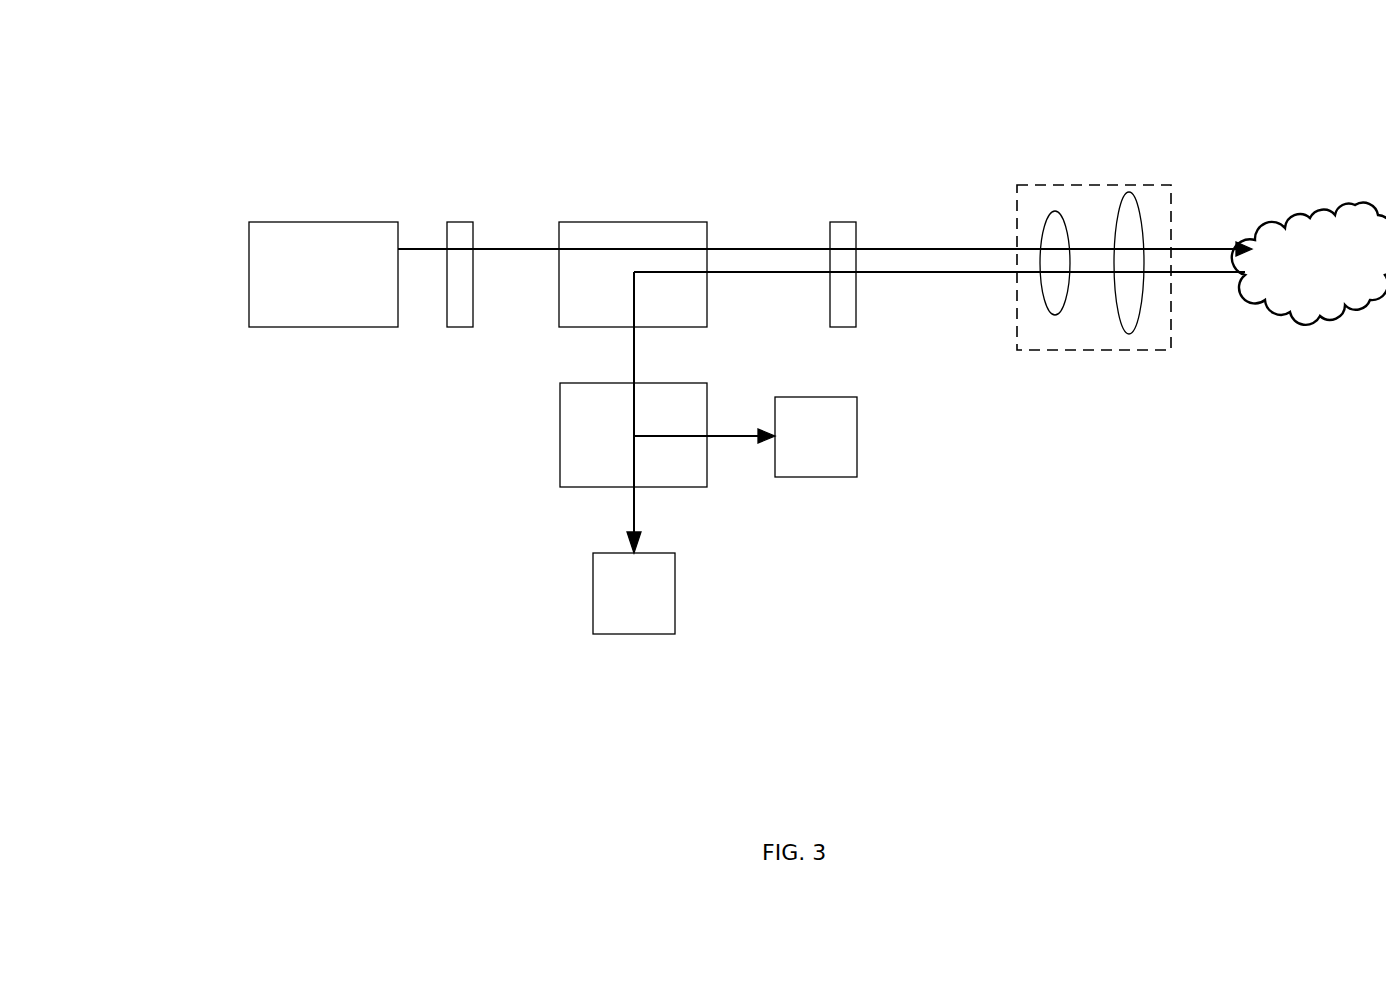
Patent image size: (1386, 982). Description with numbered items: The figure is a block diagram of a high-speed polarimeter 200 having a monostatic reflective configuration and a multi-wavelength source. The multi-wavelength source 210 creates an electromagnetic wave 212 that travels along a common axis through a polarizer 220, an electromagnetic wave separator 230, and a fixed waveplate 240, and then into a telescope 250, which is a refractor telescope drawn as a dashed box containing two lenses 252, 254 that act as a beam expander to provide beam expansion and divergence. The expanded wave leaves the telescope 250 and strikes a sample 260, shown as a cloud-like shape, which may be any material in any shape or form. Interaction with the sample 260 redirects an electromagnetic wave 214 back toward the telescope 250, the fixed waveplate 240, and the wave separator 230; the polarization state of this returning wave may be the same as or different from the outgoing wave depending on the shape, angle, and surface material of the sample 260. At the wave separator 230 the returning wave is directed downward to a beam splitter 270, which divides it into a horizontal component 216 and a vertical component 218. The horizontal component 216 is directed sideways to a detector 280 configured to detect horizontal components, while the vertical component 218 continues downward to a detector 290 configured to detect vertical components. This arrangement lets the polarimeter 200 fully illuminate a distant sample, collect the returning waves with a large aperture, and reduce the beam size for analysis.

The high-speed polarimeter 200 is at (1055, 127).
The multi-wavelength source 210 is at (249, 280).
The electromagnetic wave 212 is at (506, 251).
The electromagnetic wave 214 is at (892, 274).
The horizontal component 216 is at (728, 438).
The vertical component 218 is at (631, 518).
The polarizer 220 is at (450, 222).
The electromagnetic wave separator 230 is at (582, 222).
The fixed waveplate 240 is at (840, 222).
The telescope 250 is at (1017, 197).
The lens 252 is at (1067, 300).
The lens 254 is at (1141, 221).
The sample 260 is at (1288, 230).
The beam splitter 270 is at (560, 436).
The detector 280 is at (857, 437).
The detector 290 is at (593, 598).